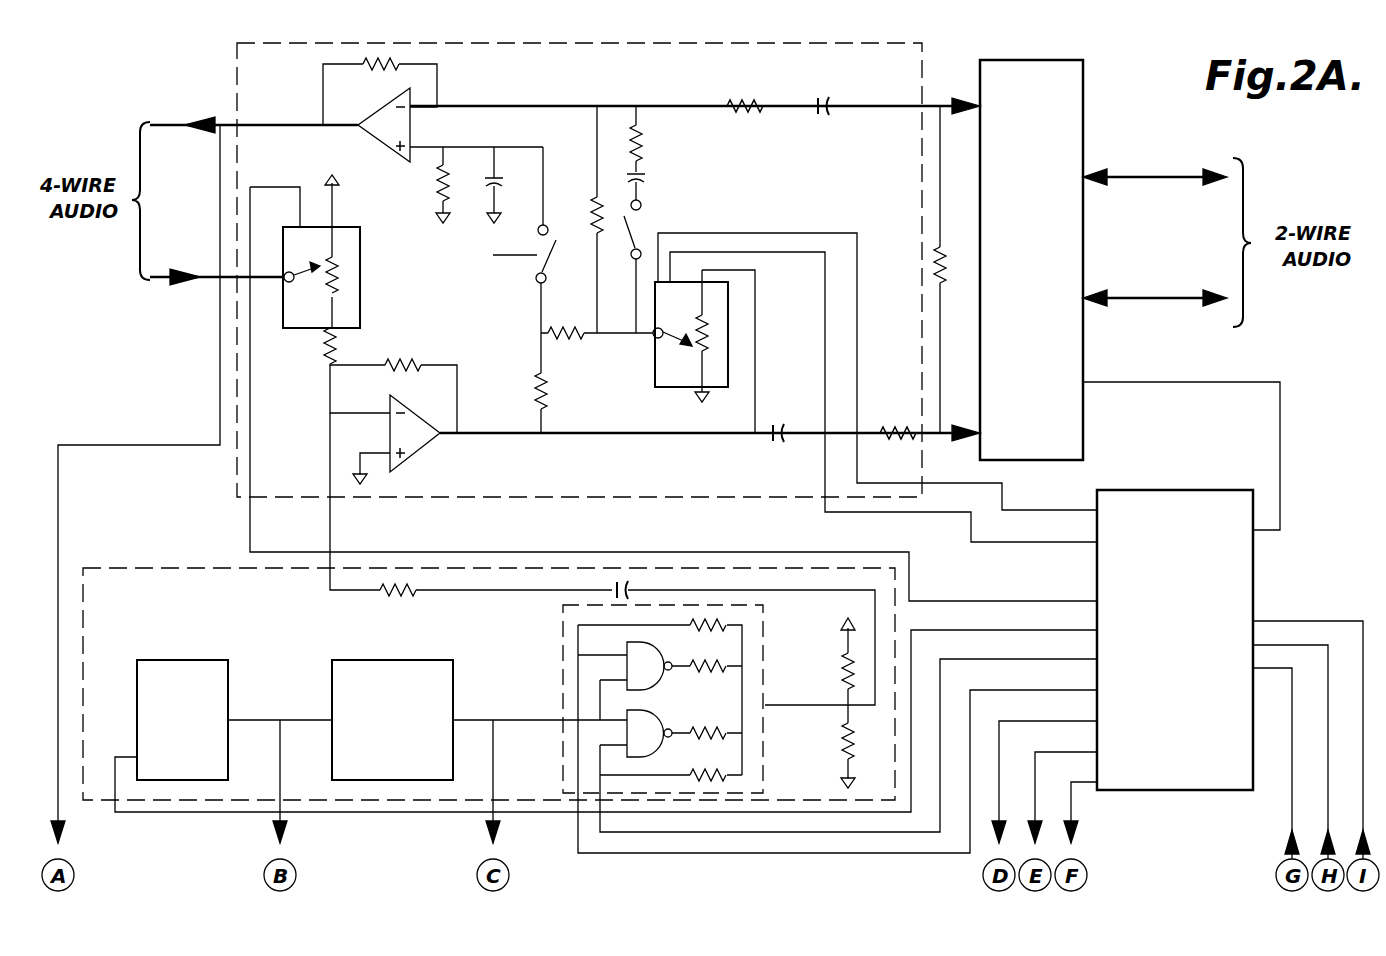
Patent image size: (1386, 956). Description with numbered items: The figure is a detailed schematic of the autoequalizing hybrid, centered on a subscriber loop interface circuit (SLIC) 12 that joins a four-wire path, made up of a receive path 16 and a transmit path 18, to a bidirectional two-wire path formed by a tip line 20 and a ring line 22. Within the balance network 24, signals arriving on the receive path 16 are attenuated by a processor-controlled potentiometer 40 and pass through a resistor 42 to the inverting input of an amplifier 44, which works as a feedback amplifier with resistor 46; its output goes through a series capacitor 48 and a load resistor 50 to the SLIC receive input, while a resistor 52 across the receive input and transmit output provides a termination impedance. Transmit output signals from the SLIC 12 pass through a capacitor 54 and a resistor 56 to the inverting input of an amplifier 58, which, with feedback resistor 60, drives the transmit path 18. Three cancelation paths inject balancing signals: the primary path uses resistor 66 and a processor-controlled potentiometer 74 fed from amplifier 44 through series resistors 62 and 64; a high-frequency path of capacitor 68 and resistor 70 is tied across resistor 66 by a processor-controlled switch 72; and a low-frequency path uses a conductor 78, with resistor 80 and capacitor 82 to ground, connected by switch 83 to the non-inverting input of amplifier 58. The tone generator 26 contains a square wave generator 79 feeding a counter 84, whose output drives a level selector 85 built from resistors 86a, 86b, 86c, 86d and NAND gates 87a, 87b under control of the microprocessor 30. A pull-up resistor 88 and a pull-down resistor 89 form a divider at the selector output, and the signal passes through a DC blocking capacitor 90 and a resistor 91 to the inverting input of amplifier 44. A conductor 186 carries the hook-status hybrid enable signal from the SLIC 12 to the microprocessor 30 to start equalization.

The subscriber loop interface circuit (SLIC) 12 is at (1084, 74).
The receive path 16 is at (172, 274).
The transmit path 18 is at (172, 123).
The tip line 20 is at (1158, 300).
The ring line 22 is at (1158, 180).
The balance network 24 is at (930, 62).
The tone generator 26 is at (130, 568).
The microprocessor 30 is at (1254, 580).
The processor-controlled potentiometer 40 is at (361, 282).
The resistor 42 is at (322, 352).
The amplifier 44 is at (423, 452).
The resistor 46 is at (408, 365).
The capacitor 48 is at (778, 442).
The load resistor 50 is at (900, 432).
The resistor 52 is at (934, 264).
The capacitor 54 is at (829, 112).
The resistor 56 is at (749, 112).
The amplifier 58 is at (374, 142).
The feedback resistor 60 is at (410, 60).
The resistor 62 is at (548, 390).
The resistor 64 is at (576, 340).
The resistor 66 is at (592, 216).
The capacitor 68 is at (646, 181).
The resistor 70 is at (642, 154).
The processor-controlled switch 72 is at (642, 222).
The processor-controlled potentiometer 74 is at (678, 387).
The conductor 78 is at (516, 146).
The square wave generator 79 is at (228, 672).
The resistor 80 is at (436, 188).
The capacitor 82 is at (486, 204).
The processor-controlled switch 83 is at (554, 242).
The counter 84 is at (453, 673).
The level selector 85 is at (558, 630).
The resistor 86a is at (720, 624).
The resistor 86b is at (724, 664).
The resistor 86c is at (724, 737).
The resistor 86d is at (724, 776).
The NAND gate 87a is at (619, 672).
The NAND gate 87b is at (619, 738).
The pull-up resistor 88 is at (844, 676).
The pull-down resistor 89 is at (852, 754).
The DC blocking capacitor 90 is at (622, 576).
The resistor 91 is at (398, 590).
The conductor 186 is at (1280, 457).